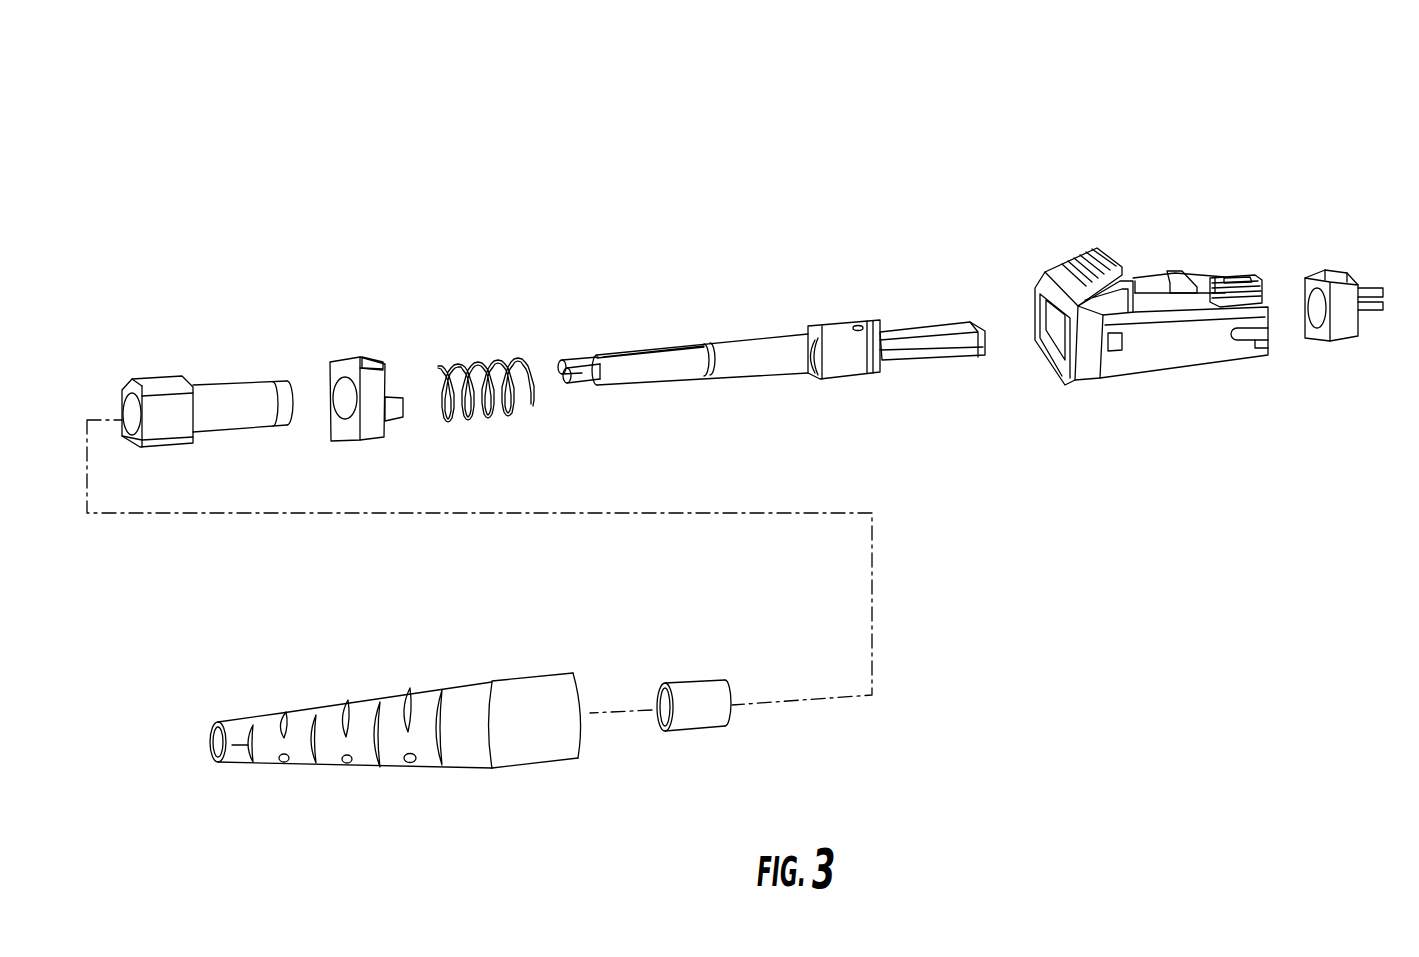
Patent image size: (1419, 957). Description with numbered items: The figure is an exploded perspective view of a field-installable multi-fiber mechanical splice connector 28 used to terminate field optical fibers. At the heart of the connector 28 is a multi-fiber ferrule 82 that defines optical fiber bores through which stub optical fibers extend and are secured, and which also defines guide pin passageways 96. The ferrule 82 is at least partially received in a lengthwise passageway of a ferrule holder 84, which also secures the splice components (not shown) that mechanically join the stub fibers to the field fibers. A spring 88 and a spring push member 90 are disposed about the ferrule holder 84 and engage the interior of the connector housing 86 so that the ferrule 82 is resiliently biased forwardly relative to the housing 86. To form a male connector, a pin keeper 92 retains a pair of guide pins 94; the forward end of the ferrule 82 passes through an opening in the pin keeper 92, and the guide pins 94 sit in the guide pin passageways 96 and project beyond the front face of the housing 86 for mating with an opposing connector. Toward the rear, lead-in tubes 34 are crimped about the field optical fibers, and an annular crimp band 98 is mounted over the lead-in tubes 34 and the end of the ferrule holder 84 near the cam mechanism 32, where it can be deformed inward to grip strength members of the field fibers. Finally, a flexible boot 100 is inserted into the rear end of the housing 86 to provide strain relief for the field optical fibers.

The multi-fiber mechanical splice connector 28 is at (1000, 122).
The cam mechanism 32 is at (157, 382).
The lead-in tubes 34 is at (580, 377).
The multi-fiber ferrule 82 is at (917, 328).
The ferrule holder 84 is at (735, 350).
The connector housing 86 is at (1153, 278).
The spring 88 is at (488, 357).
The spring push member 90 is at (345, 357).
The pin keeper 92 is at (1340, 278).
The guide pins 94 is at (1375, 305).
The guide pin passageways 96 is at (948, 352).
The annular crimp band 98 is at (708, 682).
The flexible boot 100 is at (543, 762).